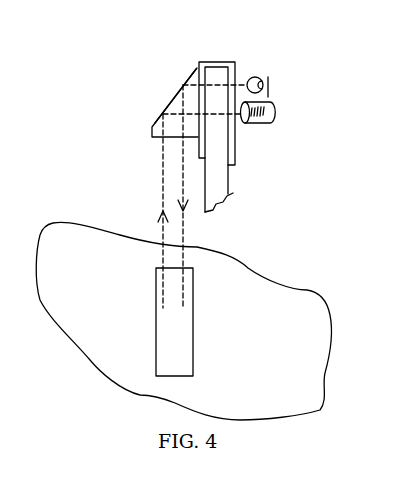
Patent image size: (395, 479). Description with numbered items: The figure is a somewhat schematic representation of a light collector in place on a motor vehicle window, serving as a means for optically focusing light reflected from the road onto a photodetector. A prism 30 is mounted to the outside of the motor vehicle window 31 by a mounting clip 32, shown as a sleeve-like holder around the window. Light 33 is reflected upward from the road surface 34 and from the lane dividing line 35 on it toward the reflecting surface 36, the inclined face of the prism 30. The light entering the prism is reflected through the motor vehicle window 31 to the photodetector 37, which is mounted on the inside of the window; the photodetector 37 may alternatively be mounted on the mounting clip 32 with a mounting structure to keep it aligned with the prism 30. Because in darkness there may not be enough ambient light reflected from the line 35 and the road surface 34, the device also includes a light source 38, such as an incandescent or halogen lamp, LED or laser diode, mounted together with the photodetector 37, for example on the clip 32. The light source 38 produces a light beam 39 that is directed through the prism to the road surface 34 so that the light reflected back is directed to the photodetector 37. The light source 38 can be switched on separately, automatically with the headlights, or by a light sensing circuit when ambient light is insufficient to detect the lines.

The prism 30 is at (153, 125).
The motor vehicle window 31 is at (233, 193).
The mounting clip 32 is at (233, 62).
The light 33 is at (161, 226).
The road surface 34 is at (104, 313).
The lane dividing line 35 is at (188, 330).
The reflecting surface 36 is at (191, 75).
The photodetector 37 is at (273, 122).
The light source 38 is at (268, 78).
The light beam 39 is at (183, 220).